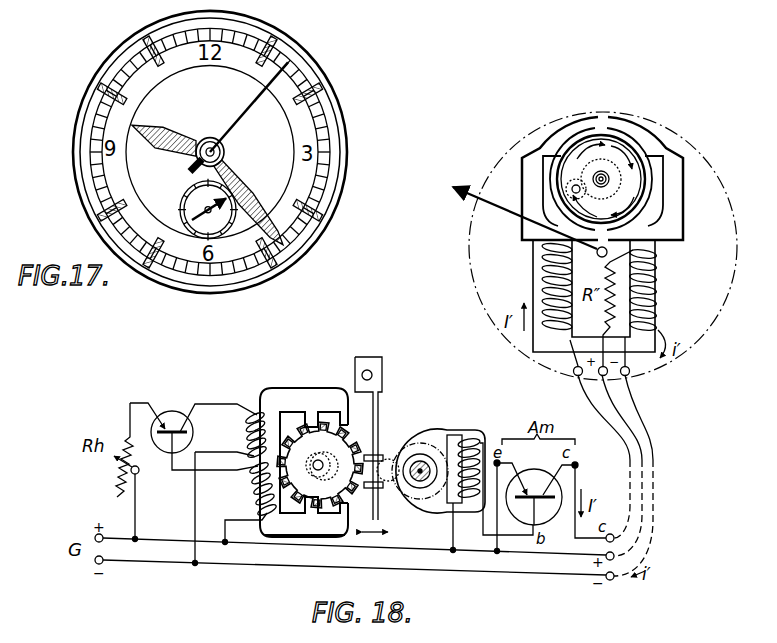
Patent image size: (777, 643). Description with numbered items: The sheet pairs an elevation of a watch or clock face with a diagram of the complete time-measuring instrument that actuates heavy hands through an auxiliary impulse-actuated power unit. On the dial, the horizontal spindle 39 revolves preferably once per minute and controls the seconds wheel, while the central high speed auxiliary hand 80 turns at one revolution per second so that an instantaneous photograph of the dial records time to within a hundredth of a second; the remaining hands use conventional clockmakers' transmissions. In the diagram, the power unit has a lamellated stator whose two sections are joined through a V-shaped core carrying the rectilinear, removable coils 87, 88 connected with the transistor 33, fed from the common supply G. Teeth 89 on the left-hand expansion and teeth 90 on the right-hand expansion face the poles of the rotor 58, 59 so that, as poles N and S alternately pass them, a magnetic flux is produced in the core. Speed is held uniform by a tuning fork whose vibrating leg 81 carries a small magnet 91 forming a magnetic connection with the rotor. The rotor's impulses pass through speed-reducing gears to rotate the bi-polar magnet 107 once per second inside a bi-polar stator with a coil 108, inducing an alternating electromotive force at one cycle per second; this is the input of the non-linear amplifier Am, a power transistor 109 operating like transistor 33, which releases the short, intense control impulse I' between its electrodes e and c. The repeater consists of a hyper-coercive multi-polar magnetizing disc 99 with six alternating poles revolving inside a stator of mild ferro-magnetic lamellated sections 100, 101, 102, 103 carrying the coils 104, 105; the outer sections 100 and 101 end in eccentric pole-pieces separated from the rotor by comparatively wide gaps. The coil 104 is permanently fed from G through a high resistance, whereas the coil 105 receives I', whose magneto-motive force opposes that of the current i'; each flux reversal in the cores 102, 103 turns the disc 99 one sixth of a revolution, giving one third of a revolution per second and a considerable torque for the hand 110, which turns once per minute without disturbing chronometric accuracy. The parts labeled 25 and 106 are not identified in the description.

In FIG. 17, the horizontal spindle 39 is at (210, 153).
In FIG. 17, the central high speed hand 80 is at (198, 210).
In FIG. 18, the rotor shaft 25 is at (313, 466).
In FIG. 18, the transistor 33 is at (161, 453).
In FIG. 18, the rotor 58 is at (306, 502).
In FIG. 18, the rotor 59 is at (313, 424).
In FIG. 18, the vibrating leg of tuning fork 81 is at (386, 517).
In FIG. 18, the coil 87 is at (251, 503).
In FIG. 18, the coil 88 is at (248, 433).
In FIG. 18, the teeth 89 is at (318, 538).
In FIG. 18, the teeth 90 is at (284, 406).
In FIG. 18, the small magnet 91 is at (370, 452).
In FIG. 18, the multi-polar magnetizing disc 99 is at (614, 143).
In FIG. 18, the stator section 100 is at (524, 175).
In FIG. 18, the stator section 101 is at (627, 150).
In FIG. 18, the core 102 is at (548, 289).
In FIG. 18, the core 103 is at (652, 282).
In FIG. 18, the coil 104 is at (652, 308).
In FIG. 18, the coil 105 is at (548, 264).
In FIG. 18, the rotor gear 106 is at (634, 169).
In FIG. 18, the bi-polar magnet 107 is at (421, 466).
In FIG. 18, the stator coil 108 is at (471, 442).
In FIG. 18, the power transistor 109 is at (553, 489).
In FIG. 18, the hand 110 is at (518, 222).